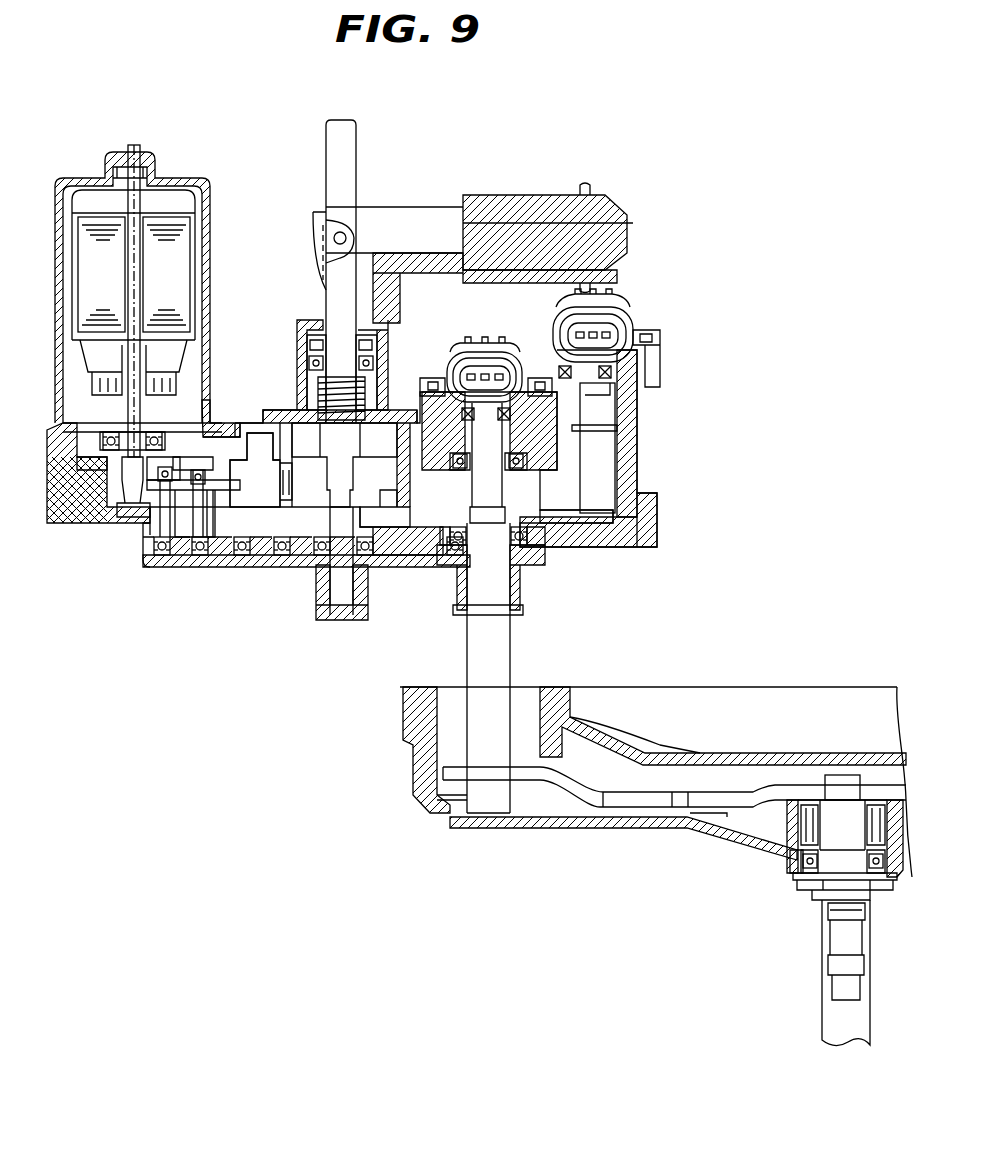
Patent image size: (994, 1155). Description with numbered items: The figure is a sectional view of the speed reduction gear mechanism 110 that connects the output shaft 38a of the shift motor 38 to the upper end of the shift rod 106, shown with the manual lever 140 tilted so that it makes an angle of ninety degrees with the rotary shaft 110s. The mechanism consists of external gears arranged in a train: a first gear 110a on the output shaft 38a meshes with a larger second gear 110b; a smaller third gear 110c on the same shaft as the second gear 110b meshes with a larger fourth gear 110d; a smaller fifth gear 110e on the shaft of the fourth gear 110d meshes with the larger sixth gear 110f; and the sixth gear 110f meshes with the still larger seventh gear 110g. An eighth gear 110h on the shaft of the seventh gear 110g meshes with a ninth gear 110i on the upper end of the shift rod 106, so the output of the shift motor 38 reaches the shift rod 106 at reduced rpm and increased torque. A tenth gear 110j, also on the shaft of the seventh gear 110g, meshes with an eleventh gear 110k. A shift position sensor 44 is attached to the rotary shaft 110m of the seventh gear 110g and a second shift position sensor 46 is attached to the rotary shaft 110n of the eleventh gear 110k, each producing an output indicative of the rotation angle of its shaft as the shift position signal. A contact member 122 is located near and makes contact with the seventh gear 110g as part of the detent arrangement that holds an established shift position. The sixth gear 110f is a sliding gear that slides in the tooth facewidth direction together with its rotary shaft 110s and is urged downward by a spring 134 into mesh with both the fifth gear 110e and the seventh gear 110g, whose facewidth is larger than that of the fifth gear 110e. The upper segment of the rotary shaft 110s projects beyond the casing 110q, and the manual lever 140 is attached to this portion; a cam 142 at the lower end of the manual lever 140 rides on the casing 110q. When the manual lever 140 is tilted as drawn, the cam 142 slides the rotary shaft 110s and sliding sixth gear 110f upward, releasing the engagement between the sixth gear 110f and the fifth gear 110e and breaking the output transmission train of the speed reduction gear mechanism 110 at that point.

The shift motor 38 is at (90, 200).
The output shaft 38a is at (83, 453).
The shift position sensor 44 is at (468, 352).
The shift position sensor 46 is at (625, 315).
The shift rod 106 is at (833, 1013).
The speed reduction gear mechanism 110 is at (140, 636).
The first gear 110a is at (120, 465).
The second gear 110b is at (140, 462).
The third gear 110c is at (150, 497).
The fourth gear 110d is at (222, 530).
The fifth gear 110e is at (292, 490).
The sixth gear 110f is at (296, 438).
The seventh gear 110g is at (412, 520).
The eighth gear 110h is at (655, 803).
The ninth gear 110i is at (700, 800).
The tenth gear 110j is at (528, 517).
The eleventh gear 110k is at (553, 518).
The rotary shaft 110m is at (493, 587).
The rotary shaft 110n is at (597, 460).
The casing 110q is at (388, 345).
The rotary shaft 110s is at (347, 142).
The contact member 122 is at (333, 236).
The spring 134 is at (297, 376).
The manual lever 140 is at (630, 232).
The cam 142 is at (310, 280).